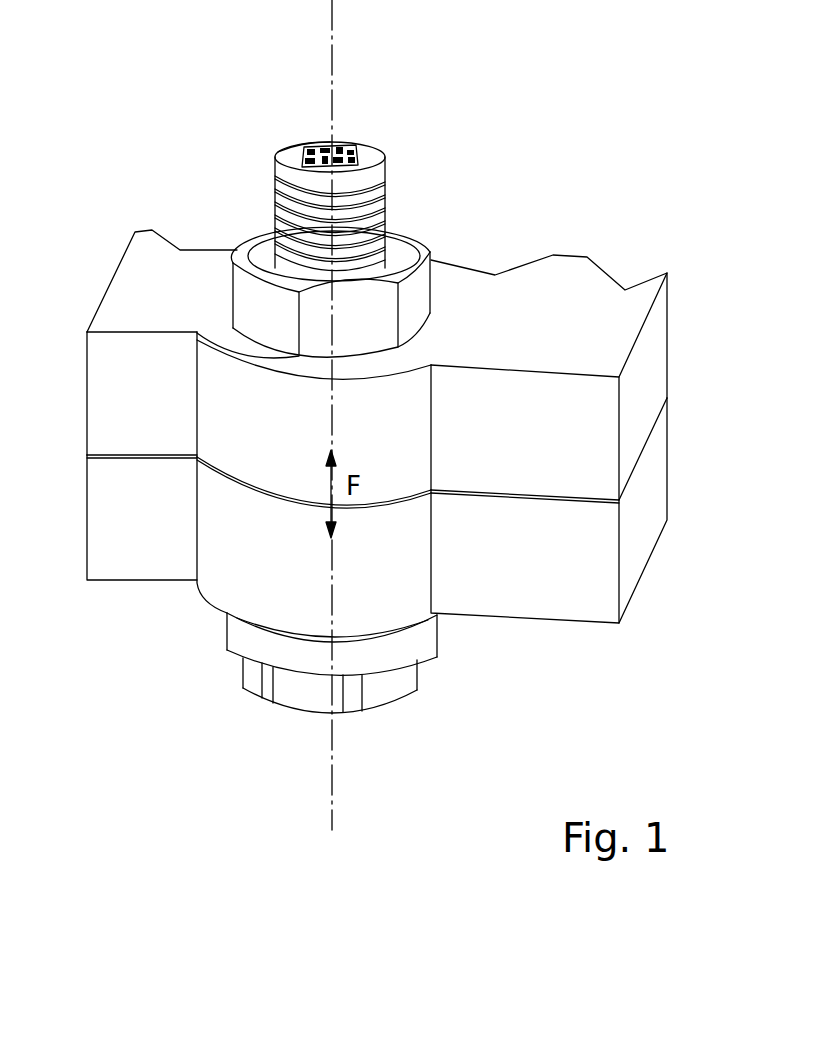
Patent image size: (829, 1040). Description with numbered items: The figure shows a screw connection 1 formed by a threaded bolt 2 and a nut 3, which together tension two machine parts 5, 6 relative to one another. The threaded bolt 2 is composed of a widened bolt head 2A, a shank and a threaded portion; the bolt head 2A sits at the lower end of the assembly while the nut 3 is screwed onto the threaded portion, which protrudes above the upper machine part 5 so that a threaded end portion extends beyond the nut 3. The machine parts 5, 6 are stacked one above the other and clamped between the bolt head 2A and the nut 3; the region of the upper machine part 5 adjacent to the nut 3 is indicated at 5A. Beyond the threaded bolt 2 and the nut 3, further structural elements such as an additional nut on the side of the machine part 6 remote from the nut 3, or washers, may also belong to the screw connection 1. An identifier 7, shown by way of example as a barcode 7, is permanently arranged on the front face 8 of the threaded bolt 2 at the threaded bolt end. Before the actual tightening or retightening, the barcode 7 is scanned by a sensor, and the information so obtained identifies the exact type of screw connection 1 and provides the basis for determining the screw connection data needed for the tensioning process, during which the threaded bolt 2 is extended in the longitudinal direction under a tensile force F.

The screw connection 1 is at (334, 367).
The threaded bolt 2 is at (282, 212).
The bolt head 2A is at (425, 637).
The nut 3 is at (422, 285).
The machine part 5 is at (412, 345).
The shoulder of upper block part 5A is at (228, 340).
The machine part 6 is at (653, 488).
The identifier 7 is at (332, 147).
The front face 8 is at (295, 157).